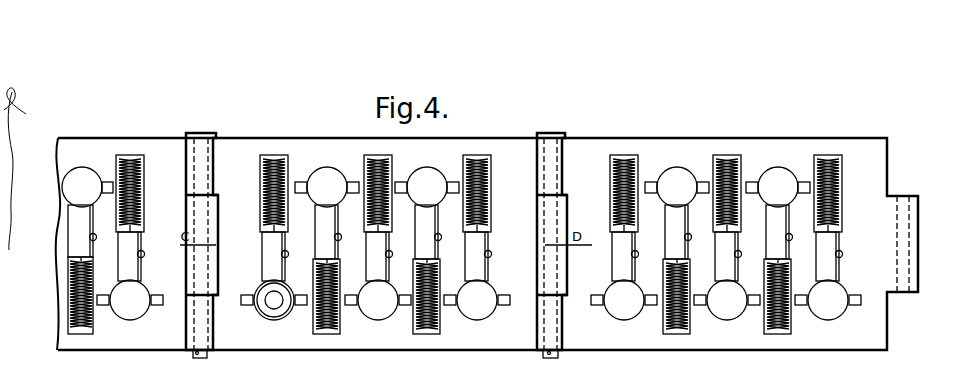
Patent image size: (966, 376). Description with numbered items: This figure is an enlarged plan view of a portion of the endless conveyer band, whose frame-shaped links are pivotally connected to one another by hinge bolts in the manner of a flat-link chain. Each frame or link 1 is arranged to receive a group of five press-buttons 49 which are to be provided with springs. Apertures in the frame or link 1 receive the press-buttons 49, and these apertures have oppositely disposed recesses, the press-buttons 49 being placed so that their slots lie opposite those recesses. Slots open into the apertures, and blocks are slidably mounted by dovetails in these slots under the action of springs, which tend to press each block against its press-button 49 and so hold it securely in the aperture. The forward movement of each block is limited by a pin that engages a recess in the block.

The frame or link 1 is at (108, 139).
The press-button 49 is at (280, 313).